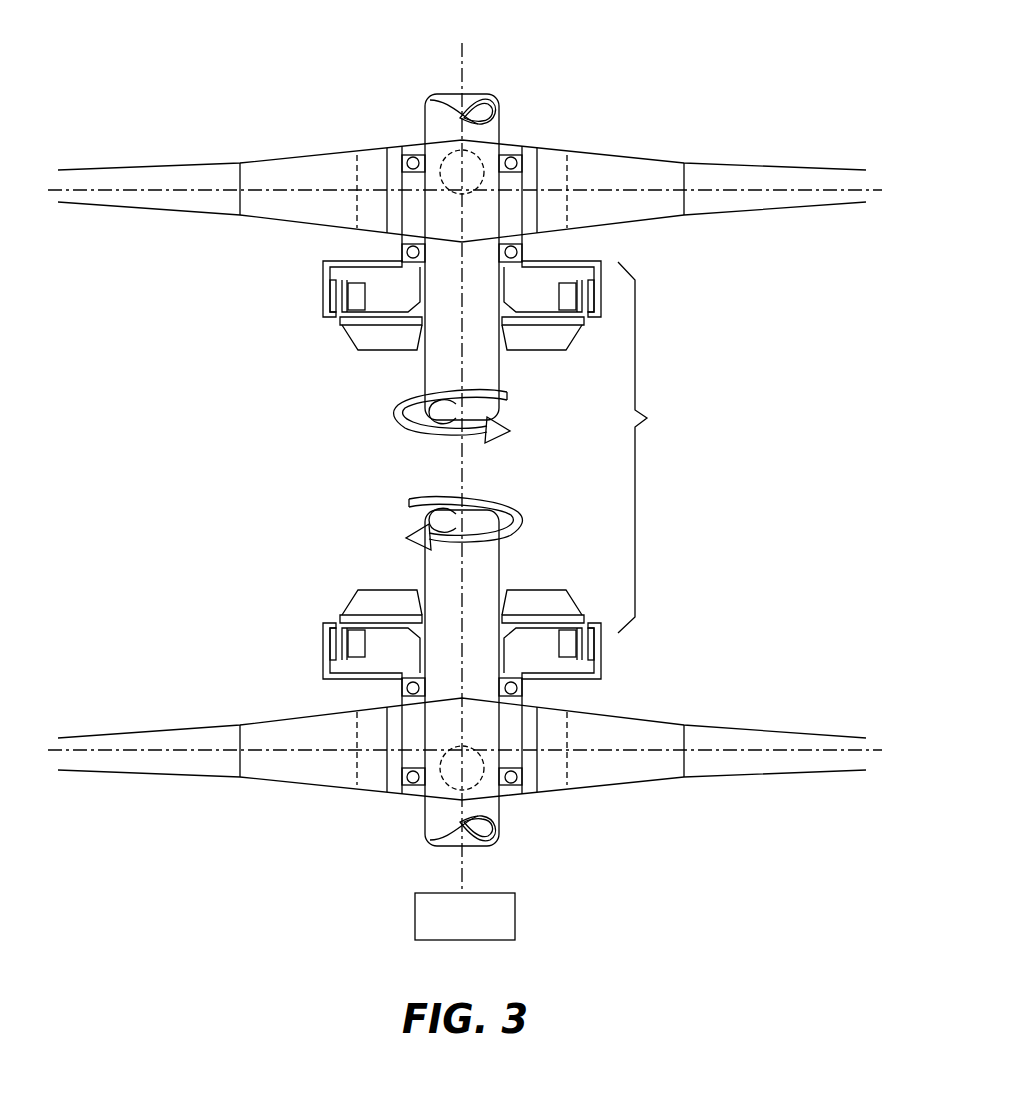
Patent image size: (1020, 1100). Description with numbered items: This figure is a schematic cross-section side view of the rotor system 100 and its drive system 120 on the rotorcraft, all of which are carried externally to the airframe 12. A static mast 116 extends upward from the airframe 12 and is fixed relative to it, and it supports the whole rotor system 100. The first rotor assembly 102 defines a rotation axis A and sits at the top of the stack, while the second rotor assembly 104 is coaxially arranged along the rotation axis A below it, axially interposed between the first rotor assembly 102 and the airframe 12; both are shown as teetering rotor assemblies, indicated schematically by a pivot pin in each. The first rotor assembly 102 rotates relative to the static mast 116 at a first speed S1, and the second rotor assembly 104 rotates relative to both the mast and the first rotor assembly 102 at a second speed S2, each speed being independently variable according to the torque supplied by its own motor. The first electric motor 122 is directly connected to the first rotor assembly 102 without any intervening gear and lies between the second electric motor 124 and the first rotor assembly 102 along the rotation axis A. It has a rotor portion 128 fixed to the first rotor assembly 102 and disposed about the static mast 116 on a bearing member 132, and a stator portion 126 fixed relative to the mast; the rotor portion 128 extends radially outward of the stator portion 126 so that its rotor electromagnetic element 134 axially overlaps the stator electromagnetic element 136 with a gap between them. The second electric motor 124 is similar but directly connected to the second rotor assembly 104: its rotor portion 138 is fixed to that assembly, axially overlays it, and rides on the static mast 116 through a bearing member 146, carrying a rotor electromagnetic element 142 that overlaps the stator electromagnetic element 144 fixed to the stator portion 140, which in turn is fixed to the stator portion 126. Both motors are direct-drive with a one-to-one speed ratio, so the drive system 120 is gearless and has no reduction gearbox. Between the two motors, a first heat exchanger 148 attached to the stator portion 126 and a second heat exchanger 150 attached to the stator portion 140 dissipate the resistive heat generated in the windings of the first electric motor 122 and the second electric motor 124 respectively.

The rotor system 100 is at (175, 880).
The first rotor assembly 102 is at (645, 116).
The second rotor assembly 104 is at (660, 657).
The static mast 116 is at (500, 368).
The drive system 120 is at (656, 447).
The first electric motor 122 is at (600, 252).
The second electric motor 124 is at (615, 673).
The stator portion 126 is at (341, 322).
The rotor portion 128 is at (348, 262).
The bearing member 132 is at (511, 152).
The rotor electromagnetic element 134 is at (331, 294).
The stator electromagnetic element 136 is at (358, 297).
The rotor portion 138 is at (337, 680).
The stator portion 140 is at (345, 616).
The rotor electromagnetic element 142 is at (332, 642).
The stator electromagnetic element 144 is at (358, 642).
The bearing member 146 is at (412, 784).
The first heat exchanger 148 is at (554, 337).
The second heat exchanger 150 is at (530, 600).
The airframe 12 is at (450, 928).
The rotation axis A is at (467, 83).
The first speed S1 is at (405, 427).
The second speed S2 is at (483, 500).